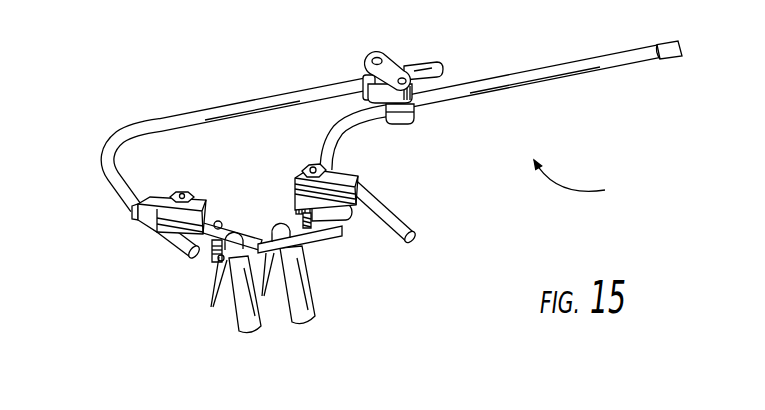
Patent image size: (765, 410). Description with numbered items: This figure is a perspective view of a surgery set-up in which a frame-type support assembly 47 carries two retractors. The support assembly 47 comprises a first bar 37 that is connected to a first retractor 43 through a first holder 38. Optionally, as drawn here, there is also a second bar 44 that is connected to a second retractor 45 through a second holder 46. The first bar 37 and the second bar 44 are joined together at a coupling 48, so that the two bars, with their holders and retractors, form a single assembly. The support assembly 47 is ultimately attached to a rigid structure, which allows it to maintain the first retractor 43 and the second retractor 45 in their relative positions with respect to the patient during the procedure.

The first bar 37 is at (630, 57).
The first holder 38 is at (350, 166).
The first retractor 43 is at (315, 332).
The second bar 44 is at (247, 104).
The second retractor 45 is at (226, 326).
The second holder 46 is at (153, 207).
The support assembly 47 is at (584, 181).
The coupling 48 is at (393, 72).